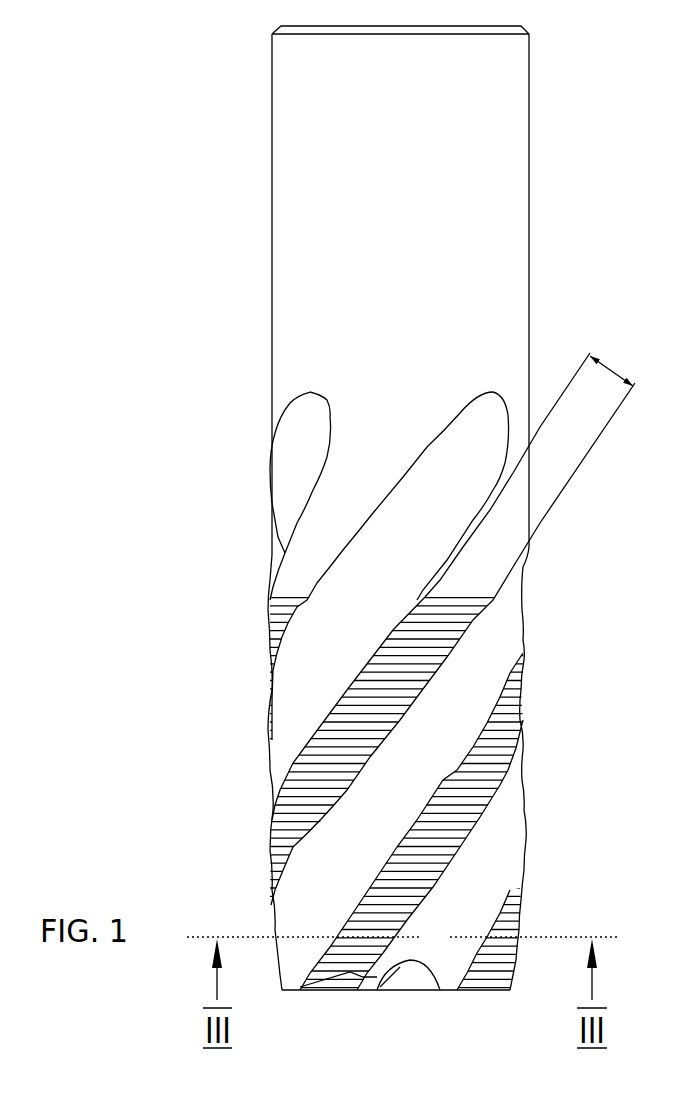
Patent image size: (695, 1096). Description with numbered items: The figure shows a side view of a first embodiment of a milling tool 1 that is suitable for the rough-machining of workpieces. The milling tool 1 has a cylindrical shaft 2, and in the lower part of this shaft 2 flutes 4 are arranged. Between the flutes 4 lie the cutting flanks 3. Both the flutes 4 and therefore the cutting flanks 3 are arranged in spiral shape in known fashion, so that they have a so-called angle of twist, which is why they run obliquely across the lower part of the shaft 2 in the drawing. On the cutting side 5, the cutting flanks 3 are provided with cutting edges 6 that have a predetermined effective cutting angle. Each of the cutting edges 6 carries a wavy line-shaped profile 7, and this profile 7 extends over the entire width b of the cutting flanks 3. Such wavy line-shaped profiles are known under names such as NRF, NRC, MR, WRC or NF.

The milling tool 1 is at (553, 142).
The cylindrical shaft 2 is at (513, 62).
The cutting flanks 3 is at (338, 738).
The flutes 4 is at (310, 643).
The cutting side 5 is at (336, 877).
The cutting edges 6 is at (383, 848).
The wavy line-shaped profile 7 is at (347, 691).
The width of the cutting flanks b is at (632, 385).